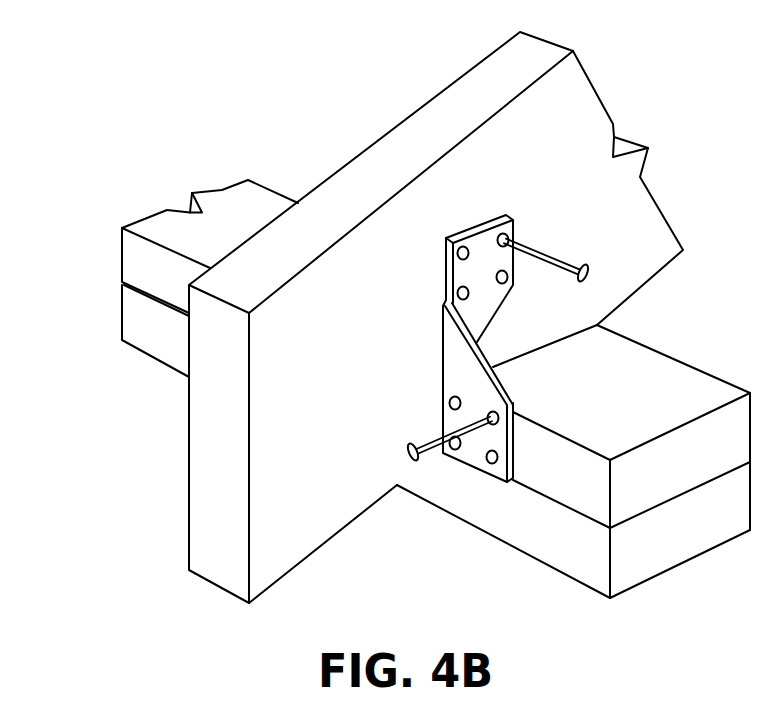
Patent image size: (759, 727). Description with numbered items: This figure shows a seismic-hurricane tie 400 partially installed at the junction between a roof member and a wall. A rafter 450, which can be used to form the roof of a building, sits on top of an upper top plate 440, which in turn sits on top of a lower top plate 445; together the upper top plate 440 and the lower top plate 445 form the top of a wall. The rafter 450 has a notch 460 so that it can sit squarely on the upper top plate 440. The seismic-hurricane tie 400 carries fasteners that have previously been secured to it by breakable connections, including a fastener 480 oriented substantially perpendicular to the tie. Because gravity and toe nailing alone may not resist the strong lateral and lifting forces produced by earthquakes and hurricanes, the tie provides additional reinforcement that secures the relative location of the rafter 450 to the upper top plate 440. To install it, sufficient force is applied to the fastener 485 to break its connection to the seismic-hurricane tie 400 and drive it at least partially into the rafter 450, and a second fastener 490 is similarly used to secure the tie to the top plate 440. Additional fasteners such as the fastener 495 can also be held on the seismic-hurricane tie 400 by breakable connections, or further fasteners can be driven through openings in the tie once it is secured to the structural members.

The seismic-hurricane tie 400 is at (458, 365).
The upper top plate 440 is at (147, 255).
The lower top plate 445 is at (172, 330).
The rafter 450 is at (213, 518).
The notch 460 is at (513, 342).
The fastener 480 is at (411, 463).
The fastener 485 is at (587, 260).
The second fastener 490 is at (463, 247).
The fastener 495 is at (488, 462).